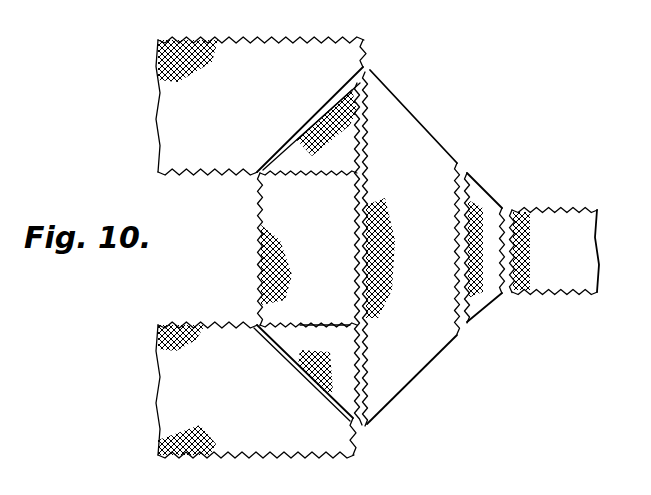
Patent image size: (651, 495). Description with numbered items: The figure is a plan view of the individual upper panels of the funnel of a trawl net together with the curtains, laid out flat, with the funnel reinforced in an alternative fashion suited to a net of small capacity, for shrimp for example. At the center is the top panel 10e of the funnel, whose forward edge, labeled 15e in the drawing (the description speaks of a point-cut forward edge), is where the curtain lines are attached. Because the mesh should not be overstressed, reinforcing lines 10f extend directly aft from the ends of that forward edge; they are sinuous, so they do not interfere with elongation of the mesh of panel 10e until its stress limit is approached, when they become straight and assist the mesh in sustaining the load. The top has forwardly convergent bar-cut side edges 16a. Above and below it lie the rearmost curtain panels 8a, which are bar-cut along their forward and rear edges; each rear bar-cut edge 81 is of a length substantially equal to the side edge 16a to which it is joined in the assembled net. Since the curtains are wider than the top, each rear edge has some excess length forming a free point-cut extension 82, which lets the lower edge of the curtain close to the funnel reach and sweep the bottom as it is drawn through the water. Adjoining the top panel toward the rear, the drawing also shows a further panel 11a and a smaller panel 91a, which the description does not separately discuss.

The rearmost curtain panel 8a is at (255, 106).
The top panel 10e is at (340, 227).
The reinforcing lines 10f is at (326, 322).
The closure panel 11a is at (437, 241).
The adhesive area 15e is at (258, 218).
The bar-cut side edge 16a is at (288, 147).
The rear bar-cut edge 81 is at (337, 100).
The free point-cut extension 82 is at (365, 50).
The end flap 91a is at (578, 262).